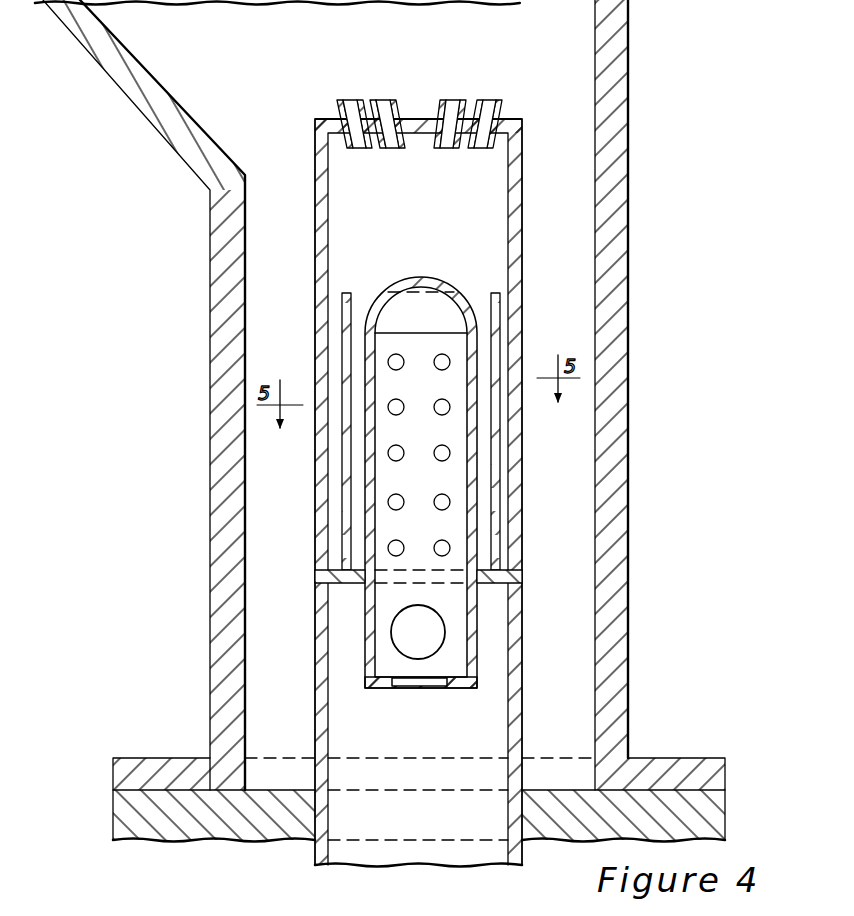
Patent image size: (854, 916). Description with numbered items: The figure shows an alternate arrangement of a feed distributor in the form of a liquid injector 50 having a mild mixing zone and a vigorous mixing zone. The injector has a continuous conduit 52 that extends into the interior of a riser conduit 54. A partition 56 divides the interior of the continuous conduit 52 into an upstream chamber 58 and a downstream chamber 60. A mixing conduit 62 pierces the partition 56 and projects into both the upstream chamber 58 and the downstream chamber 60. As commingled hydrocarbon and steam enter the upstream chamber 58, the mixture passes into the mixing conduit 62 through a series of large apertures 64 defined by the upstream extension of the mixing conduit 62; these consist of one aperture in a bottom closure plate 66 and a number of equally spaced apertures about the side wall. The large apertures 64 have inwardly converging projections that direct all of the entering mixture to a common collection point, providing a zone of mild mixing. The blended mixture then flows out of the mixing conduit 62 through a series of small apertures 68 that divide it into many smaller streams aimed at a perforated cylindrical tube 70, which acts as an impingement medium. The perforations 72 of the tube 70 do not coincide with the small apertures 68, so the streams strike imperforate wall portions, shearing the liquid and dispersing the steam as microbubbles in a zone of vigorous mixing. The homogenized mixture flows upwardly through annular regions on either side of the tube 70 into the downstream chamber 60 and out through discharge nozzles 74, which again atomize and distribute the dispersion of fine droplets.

The liquid injector 50 is at (312, 170).
The continuous conduit 52 is at (417, 493).
The riser conduit 54 is at (649, 395).
The partition 56 is at (440, 600).
The upstream chamber 58 is at (436, 820).
The downstream chamber 60 is at (436, 254).
The mixing conduit 62 is at (466, 482).
The large apertures 64 is at (395, 707).
The bottom closure plate 66 is at (431, 706).
The small apertures 68 is at (418, 431).
The perforated cylindrical tube 70 is at (304, 435).
The perforations 72 is at (416, 426).
The discharge nozzles 74 is at (419, 150).